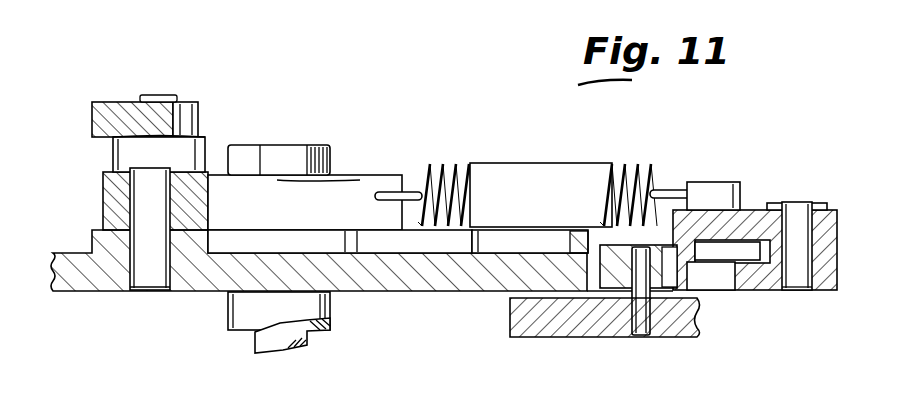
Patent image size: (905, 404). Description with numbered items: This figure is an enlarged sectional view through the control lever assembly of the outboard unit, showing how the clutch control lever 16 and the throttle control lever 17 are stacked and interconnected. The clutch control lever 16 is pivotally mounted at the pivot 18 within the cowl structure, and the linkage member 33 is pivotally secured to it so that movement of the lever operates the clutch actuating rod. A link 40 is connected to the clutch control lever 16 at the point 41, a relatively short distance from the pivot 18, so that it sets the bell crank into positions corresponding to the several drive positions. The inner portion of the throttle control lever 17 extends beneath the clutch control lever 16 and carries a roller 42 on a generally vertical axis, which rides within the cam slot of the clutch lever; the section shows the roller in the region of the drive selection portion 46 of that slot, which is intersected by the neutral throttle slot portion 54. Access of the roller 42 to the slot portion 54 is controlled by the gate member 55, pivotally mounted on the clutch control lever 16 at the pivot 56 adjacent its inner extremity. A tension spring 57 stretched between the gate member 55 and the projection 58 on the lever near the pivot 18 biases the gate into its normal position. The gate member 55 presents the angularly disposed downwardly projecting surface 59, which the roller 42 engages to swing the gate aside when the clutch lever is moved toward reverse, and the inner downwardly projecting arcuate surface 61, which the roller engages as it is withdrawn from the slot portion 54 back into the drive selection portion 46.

The clutch control lever 16 is at (217, 286).
The throttle control lever 17 is at (563, 329).
The pivot 18 is at (289, 147).
The linkage member 33 is at (112, 203).
The link 40 is at (93, 118).
The link connection point 41 is at (170, 96).
The roller 42 is at (623, 282).
The drive selection portion 46 is at (582, 245).
The neutral throttle slot portion 54 is at (710, 283).
The gate member 55 is at (752, 212).
The gate member pivot 56 is at (800, 206).
The tension spring 57 is at (447, 164).
The projection 58 is at (398, 184).
The angularly disposed downwardly projecting surface 59 is at (671, 228).
The inner downwardly projecting arcuate surface 61 is at (728, 254).